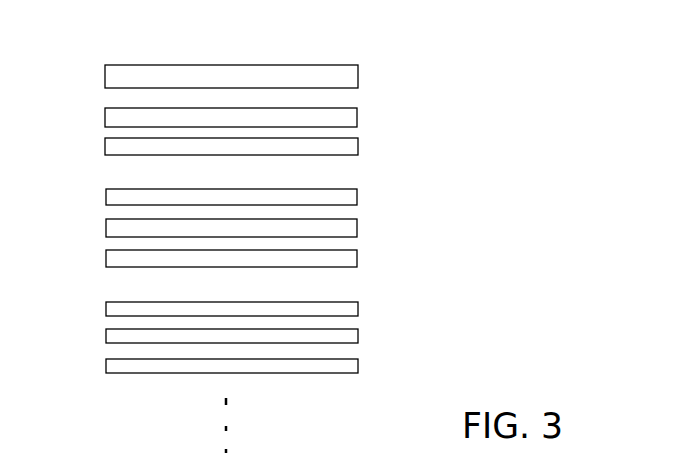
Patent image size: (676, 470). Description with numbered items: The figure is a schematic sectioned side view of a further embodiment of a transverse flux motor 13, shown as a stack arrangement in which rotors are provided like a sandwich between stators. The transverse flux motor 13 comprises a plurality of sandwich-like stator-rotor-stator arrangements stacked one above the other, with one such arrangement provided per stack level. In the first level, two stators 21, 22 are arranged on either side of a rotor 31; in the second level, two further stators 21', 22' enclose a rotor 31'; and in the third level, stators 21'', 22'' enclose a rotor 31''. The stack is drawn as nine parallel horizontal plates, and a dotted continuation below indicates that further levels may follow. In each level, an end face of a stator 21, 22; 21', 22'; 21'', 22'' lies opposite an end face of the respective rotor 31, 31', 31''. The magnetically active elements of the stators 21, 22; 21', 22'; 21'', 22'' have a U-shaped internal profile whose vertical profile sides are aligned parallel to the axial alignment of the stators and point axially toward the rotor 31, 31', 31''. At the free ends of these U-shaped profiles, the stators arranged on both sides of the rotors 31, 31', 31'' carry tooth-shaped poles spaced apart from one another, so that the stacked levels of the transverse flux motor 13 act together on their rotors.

The transverse flux motor 13 is at (310, 206).
The stator 21 is at (253, 56).
The rotor 31 is at (257, 113).
The stator 22 is at (260, 155).
The stator 21' is at (264, 193).
The rotor 31' is at (264, 225).
The stator 22' is at (264, 261).
The stator 21'' is at (262, 304).
The rotor 31'' is at (262, 338).
The stator 22'' is at (264, 376).